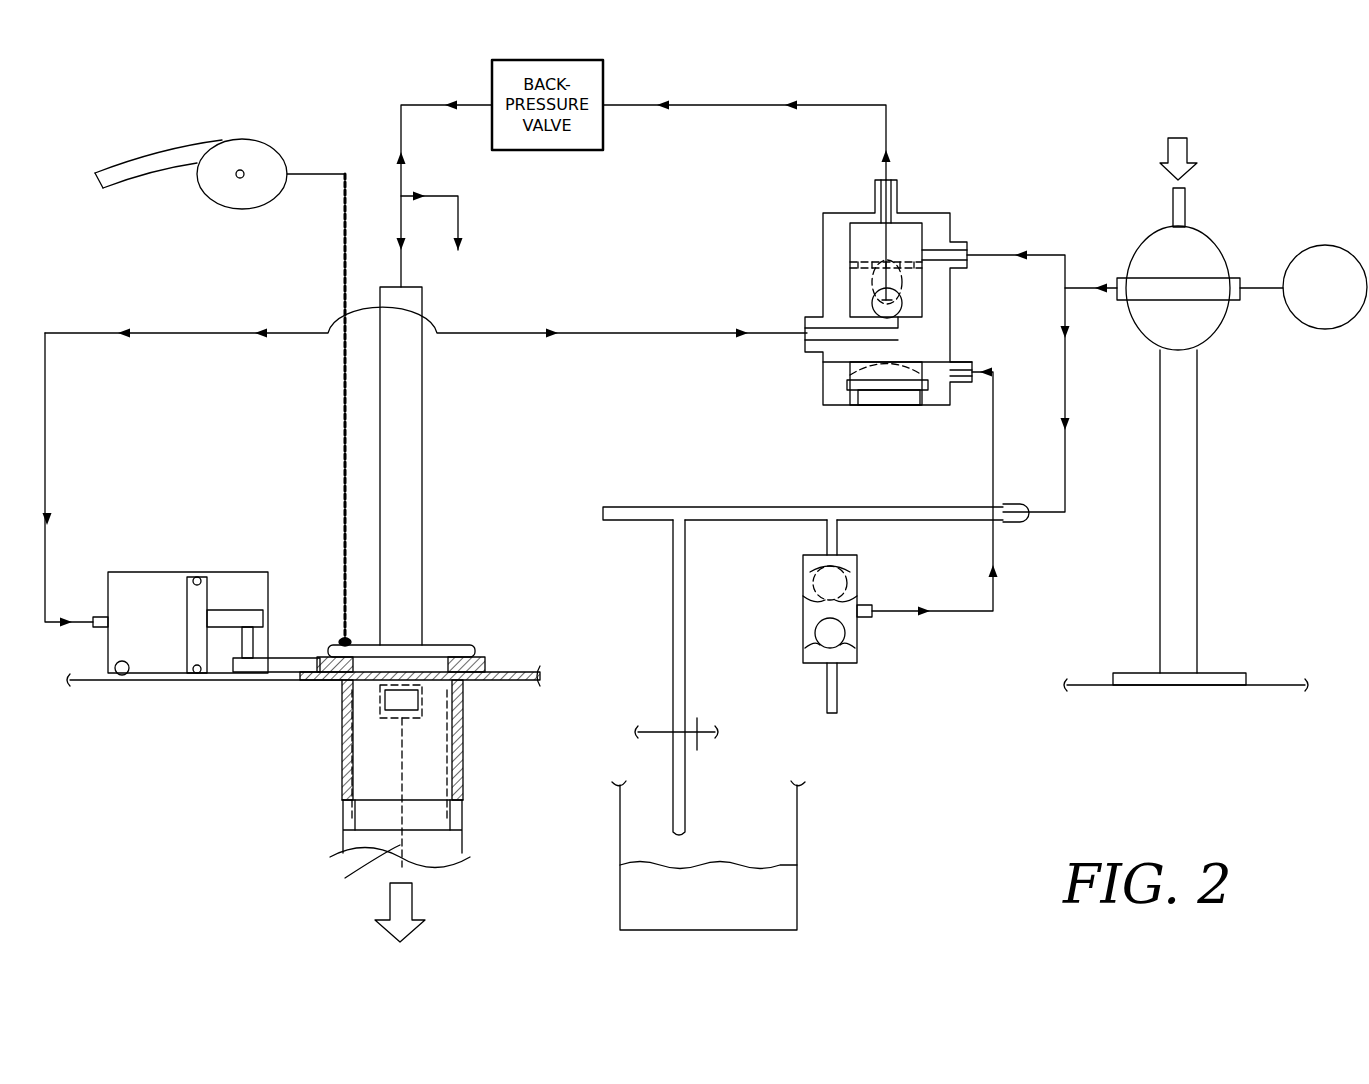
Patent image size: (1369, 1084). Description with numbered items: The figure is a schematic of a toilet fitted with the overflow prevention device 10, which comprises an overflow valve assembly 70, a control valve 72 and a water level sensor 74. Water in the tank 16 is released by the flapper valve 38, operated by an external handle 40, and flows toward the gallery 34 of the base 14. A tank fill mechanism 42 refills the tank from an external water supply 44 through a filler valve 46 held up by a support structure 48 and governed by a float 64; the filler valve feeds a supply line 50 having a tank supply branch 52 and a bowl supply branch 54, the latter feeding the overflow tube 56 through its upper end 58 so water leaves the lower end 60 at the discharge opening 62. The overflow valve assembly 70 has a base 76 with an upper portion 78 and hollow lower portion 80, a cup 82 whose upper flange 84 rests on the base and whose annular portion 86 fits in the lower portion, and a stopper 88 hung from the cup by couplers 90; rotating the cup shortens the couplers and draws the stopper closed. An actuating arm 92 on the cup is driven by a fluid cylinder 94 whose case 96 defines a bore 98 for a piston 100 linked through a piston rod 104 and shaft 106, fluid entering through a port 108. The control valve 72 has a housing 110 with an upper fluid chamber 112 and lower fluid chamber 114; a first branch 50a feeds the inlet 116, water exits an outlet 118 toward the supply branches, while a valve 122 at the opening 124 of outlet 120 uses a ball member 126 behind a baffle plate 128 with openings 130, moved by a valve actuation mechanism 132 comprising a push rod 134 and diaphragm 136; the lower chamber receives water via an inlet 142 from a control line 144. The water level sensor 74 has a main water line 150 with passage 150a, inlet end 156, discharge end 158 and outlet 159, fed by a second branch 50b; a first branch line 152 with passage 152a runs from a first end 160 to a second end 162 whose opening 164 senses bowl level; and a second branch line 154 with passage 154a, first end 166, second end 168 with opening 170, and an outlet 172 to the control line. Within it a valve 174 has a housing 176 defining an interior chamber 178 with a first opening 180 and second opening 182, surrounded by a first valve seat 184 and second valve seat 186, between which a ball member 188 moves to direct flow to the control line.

The overflow prevention device 10 is at (1006, 107).
The base 14 is at (797, 810).
The tank 16 is at (1290, 688).
The gallery 34 is at (700, 718).
The flapper valve 38 is at (433, 645).
The handle 40 is at (245, 148).
The tank fill mechanism 42 is at (1240, 402).
The external water supply source 44 is at (1188, 150).
The filler valve 46 is at (1210, 340).
The support structure 48 is at (1197, 512).
The supply line 50 is at (700, 115).
The first branch of supply line 50a is at (1066, 258).
The second branch of supply line 50b is at (1065, 378).
The tank supply branch 52 is at (462, 198).
The bowl supply branch 54 is at (401, 222).
The overflow tube 56 is at (440, 449).
The upper end of overflow tube 58 is at (422, 350).
The lower end of overflow tube 60 is at (380, 718).
The discharge opening 62 is at (400, 705).
The float 64 is at (1313, 330).
The overflow valve assembly 70 is at (377, 754).
The control valve 72 is at (881, 298).
The water level sensor 74 is at (863, 652).
The base 76 is at (335, 726).
The upper portion of base 78 is at (497, 673).
The lower portion of base 80 is at (465, 790).
The cup 82 is at (503, 640).
The upper flange 84 is at (470, 645).
The annular portion 86 is at (465, 686).
The stopper 88 is at (433, 835).
The couplers 90 is at (465, 752).
The actuating arm 92 is at (290, 663).
The fluid cylinder 94 is at (152, 688).
The case 96 is at (130, 572).
The bore 98 is at (120, 680).
The piston 100 is at (187, 612).
The piston rod 104 is at (230, 610).
The shaft 106 is at (255, 635).
The port 108 is at (100, 617).
The housing 110 is at (823, 225).
The upper fluid chamber 112 is at (876, 205).
The lower fluid chamber 114 is at (825, 375).
The inlet 116 is at (967, 250).
The outlet 118 is at (892, 175).
The outlet 120 is at (805, 335).
The valve 122 is at (855, 296).
The opening 124 is at (903, 308).
The ball member 126 is at (902, 296).
The baffle plate 128 is at (888, 258).
The openings 130 is at (850, 265).
The valve actuation mechanism 132 is at (848, 385).
The push rod 134 is at (892, 400).
The diaphragm 136 is at (858, 398).
The inlet 142 is at (972, 372).
The control line 144 is at (993, 430).
The main water line 150 is at (714, 498).
The passage 150a is at (668, 507).
The first branch line 152 is at (662, 659).
The passage 152a is at (673, 592).
The second branch line 154 is at (820, 693).
The passage 154a is at (838, 694).
The inlet end 156 is at (1028, 520).
The discharge end 158 is at (636, 522).
The outlet 159 is at (605, 508).
The first end 160 is at (673, 550).
The second end 162 is at (672, 770).
The opening 164 is at (680, 834).
The first end 166 is at (838, 540).
The second end 168 is at (840, 715).
The opening 170 is at (835, 715).
The outlet 172 is at (872, 615).
The valve 174 is at (790, 618).
The housing 176 is at (803, 595).
The interior chamber 178 is at (857, 588).
The first opening 180 is at (850, 580).
The second opening 182 is at (838, 680).
The first valve seat 184 is at (812, 575).
The second valve seat 186 is at (845, 640).
The ball member 188 is at (815, 640).